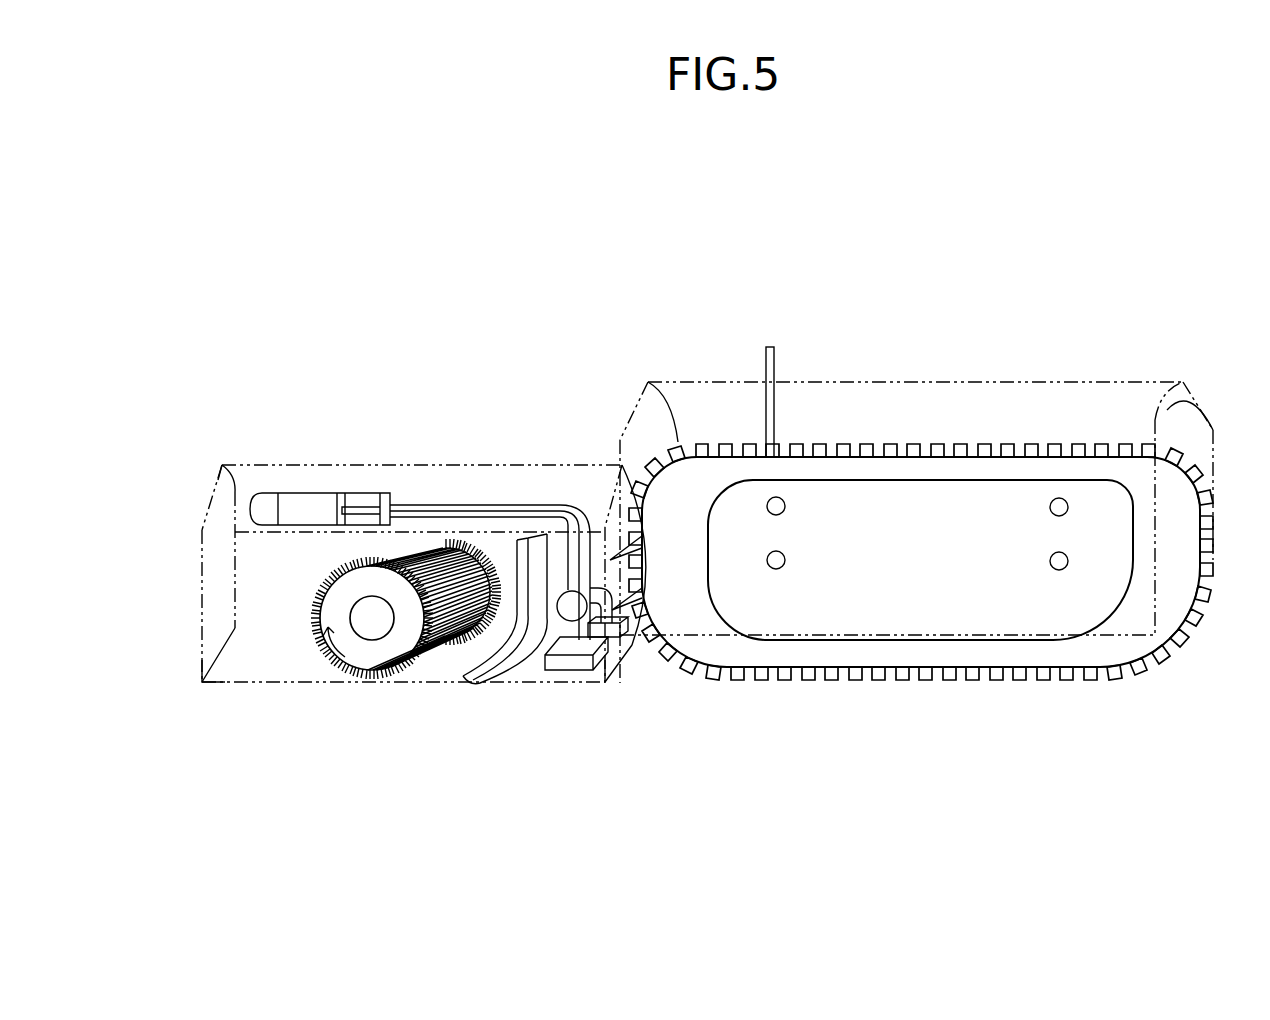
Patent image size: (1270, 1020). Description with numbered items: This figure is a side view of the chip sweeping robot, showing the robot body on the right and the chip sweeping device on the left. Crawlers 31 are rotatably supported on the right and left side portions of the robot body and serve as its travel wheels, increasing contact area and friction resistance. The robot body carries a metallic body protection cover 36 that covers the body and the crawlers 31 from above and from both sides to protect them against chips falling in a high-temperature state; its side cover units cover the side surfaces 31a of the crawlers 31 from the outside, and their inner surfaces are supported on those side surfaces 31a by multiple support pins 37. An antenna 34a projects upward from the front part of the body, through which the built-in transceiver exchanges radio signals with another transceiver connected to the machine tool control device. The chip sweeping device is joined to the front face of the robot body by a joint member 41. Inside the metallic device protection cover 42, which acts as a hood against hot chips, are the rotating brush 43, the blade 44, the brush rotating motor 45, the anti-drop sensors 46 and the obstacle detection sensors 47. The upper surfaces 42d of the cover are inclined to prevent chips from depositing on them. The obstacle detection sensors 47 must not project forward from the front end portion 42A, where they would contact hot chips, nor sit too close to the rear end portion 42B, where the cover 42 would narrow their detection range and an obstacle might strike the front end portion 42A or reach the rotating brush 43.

The crawler 31 is at (1138, 607).
The side surface of crawler 31a is at (922, 603).
The antenna 34a is at (777, 358).
The body protection cover 36 is at (1088, 382).
The support pin 37 is at (782, 572).
The joint member 41 is at (635, 640).
The device protection cover 42 is at (305, 463).
The front end portion of device protection cover 42A is at (200, 650).
The rear end portion of device protection cover 42B is at (623, 660).
The upper surface of upper cover unit 42d is at (212, 492).
The rotating brush 43 is at (367, 660).
The blade 44 is at (462, 668).
The brush rotating motor 45 is at (545, 640).
The anti-drop sensor 46 is at (578, 670).
The obstacle detection sensor 47 is at (322, 493).